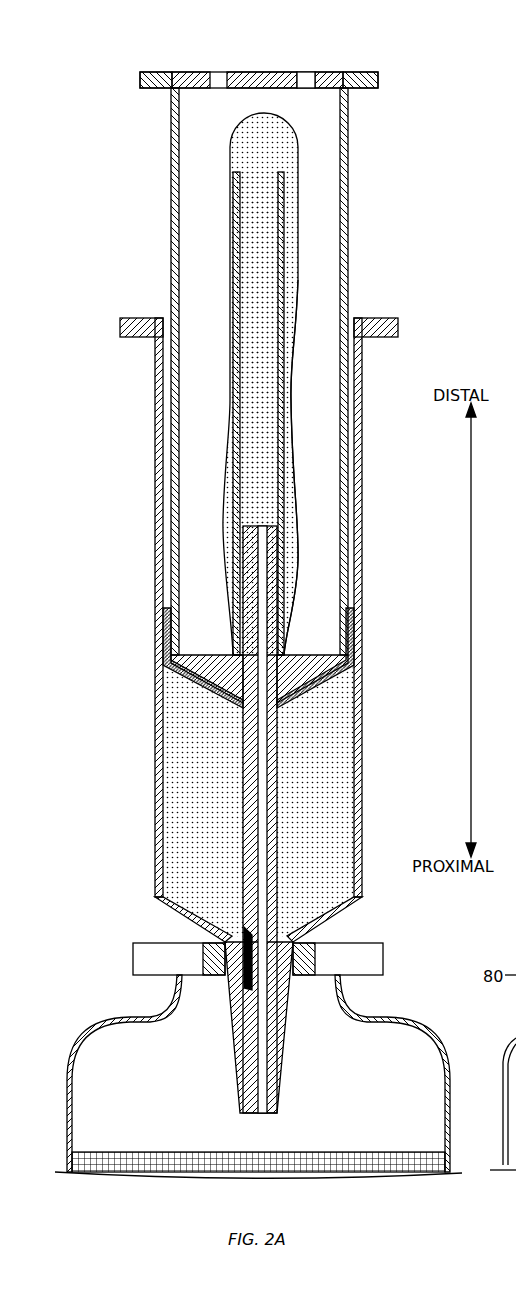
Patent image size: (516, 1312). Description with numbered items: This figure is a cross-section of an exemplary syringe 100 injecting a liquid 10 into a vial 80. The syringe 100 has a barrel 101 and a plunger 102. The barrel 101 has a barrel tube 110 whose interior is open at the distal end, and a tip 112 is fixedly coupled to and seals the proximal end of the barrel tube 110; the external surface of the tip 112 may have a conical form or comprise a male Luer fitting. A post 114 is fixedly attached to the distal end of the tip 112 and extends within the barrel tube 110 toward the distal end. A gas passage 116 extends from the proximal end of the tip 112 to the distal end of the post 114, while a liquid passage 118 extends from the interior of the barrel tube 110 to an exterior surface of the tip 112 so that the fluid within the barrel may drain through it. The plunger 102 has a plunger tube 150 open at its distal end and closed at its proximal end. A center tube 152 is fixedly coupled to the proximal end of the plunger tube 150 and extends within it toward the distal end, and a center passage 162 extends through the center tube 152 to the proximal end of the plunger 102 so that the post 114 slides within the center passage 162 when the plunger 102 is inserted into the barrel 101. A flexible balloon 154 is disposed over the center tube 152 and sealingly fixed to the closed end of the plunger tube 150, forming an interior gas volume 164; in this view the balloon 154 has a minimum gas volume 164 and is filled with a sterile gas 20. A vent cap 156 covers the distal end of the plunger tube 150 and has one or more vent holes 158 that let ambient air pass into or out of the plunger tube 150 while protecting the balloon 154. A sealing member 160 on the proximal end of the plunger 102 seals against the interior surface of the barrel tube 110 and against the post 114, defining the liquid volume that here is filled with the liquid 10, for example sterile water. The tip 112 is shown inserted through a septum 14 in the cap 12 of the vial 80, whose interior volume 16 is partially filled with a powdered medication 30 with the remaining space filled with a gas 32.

The liquid 10 is at (221, 760).
The cap 12 is at (363, 948).
The septum 14 is at (323, 952).
The interior volume 16 is at (248, 1076).
The sterile gas 20 is at (279, 158).
The powdered medication 30 is at (275, 1152).
The gas 32 is at (185, 1090).
The vial 80 is at (245, 966).
The syringe 100 is at (135, 117).
The barrel 101 is at (221, 630).
The plunger 102 is at (208, 395).
The barrel tube 110 is at (155, 537).
The tip 112 is at (282, 1033).
The post 114 is at (250, 819).
The gas passage 116 is at (263, 745).
The liquid passage 118 is at (247, 958).
The plunger tube 150 is at (171, 166).
The center tube 152 is at (172, 413).
The flexible balloon 154 is at (226, 436).
The vent cap 156 is at (265, 73).
The vent holes 158 is at (312, 62).
The sealing member 160 is at (188, 668).
The center passage 162 is at (257, 298).
The interior gas volume 164 is at (290, 262).